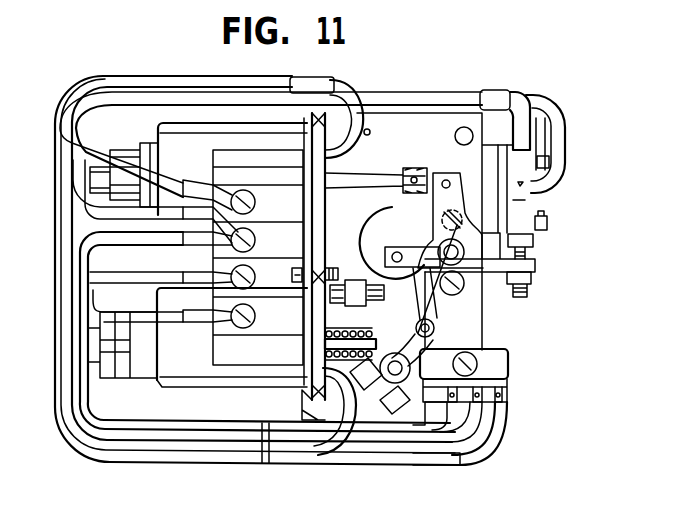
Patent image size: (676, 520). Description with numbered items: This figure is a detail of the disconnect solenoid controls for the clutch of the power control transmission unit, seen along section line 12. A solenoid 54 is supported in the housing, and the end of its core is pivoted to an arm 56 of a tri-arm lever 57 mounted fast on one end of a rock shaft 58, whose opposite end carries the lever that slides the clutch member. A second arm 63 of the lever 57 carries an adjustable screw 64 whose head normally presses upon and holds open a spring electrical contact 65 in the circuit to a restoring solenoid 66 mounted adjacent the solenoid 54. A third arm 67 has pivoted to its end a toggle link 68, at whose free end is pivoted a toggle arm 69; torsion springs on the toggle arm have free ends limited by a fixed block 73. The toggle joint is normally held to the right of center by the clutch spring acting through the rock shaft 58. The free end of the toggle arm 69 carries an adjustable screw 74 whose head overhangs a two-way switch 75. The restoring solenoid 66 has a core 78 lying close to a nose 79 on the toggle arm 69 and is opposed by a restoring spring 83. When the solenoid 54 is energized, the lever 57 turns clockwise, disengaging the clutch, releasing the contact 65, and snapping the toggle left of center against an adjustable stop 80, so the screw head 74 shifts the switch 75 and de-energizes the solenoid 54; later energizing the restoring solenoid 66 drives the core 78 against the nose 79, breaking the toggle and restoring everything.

The section line / cable bundle 12 is at (452, 330).
The solenoid 54 is at (198, 164).
The arm 56 is at (447, 194).
The tri-arm lever 57 is at (479, 186).
The rock shaft 58 is at (443, 255).
The second arm 63 is at (535, 266).
The adjustable screw 64 is at (531, 242).
The spring electrical contact 65 is at (519, 233).
The restoring solenoid 66 is at (199, 361).
The third arm 67 is at (412, 249).
The toggle link 68 is at (433, 301).
The toggle arm 69 is at (434, 340).
The fixed block 73 is at (510, 363).
The adjustable screw 74 is at (350, 387).
The two-way switch 75 is at (419, 398).
The core 78 is at (330, 345).
The nose 79 is at (406, 347).
The adjustable stop 80 is at (358, 281).
The restoring spring 83 is at (336, 332).